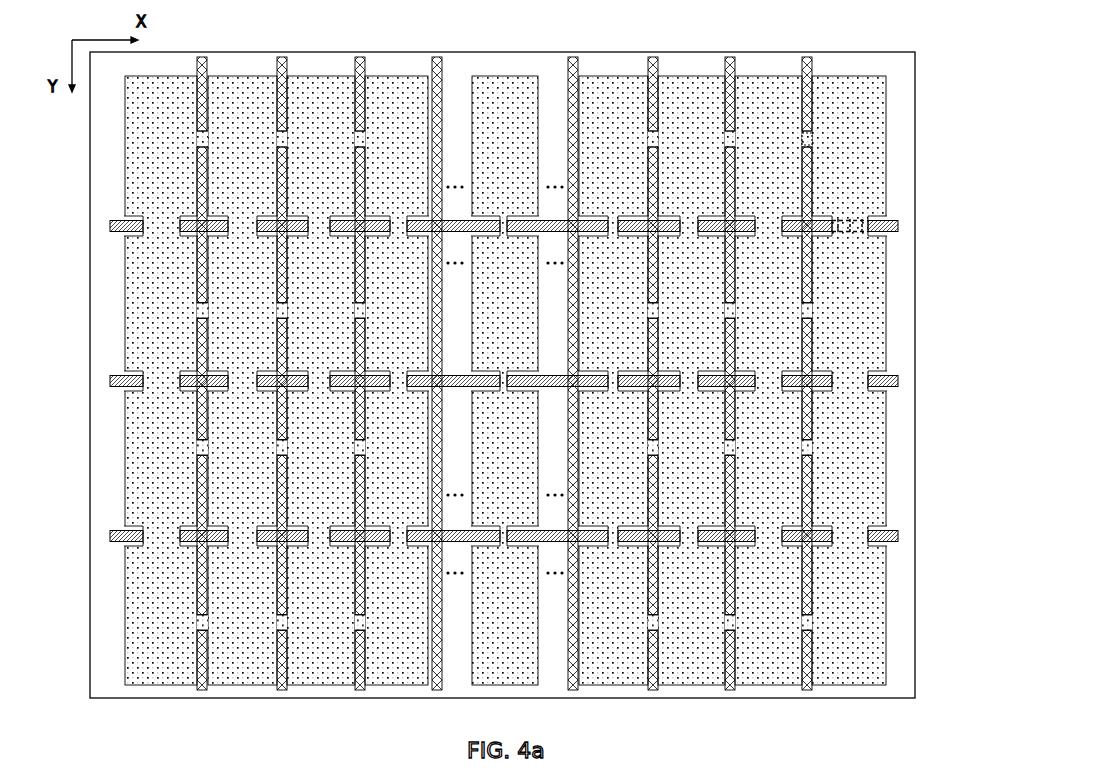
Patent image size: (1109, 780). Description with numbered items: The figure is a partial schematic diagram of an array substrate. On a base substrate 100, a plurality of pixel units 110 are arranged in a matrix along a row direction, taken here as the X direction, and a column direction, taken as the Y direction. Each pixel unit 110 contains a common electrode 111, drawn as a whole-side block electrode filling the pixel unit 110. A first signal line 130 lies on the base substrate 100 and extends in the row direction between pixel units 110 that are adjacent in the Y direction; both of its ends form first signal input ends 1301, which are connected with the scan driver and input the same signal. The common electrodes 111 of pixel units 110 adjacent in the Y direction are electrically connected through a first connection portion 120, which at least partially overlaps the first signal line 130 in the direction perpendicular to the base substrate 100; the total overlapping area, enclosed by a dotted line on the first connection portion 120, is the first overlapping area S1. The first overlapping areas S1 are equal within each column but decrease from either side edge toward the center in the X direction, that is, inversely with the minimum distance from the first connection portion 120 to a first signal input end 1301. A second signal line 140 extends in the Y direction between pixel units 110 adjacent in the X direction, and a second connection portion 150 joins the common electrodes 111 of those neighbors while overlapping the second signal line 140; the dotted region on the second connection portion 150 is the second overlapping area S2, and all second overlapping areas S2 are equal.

The base substrate 100 is at (897, 70).
The pixel unit 110 is at (887, 100).
The common electrode 111 is at (868, 118).
The first connection portion 120 is at (772, 223).
The first signal line 130 is at (887, 221).
The first signal input end 1301 is at (898, 228).
The second signal line 140 is at (810, 257).
The second connection portion 150 is at (731, 131).
The first overlapping area S1 is at (851, 219).
The second overlapping area S2 is at (813, 140).